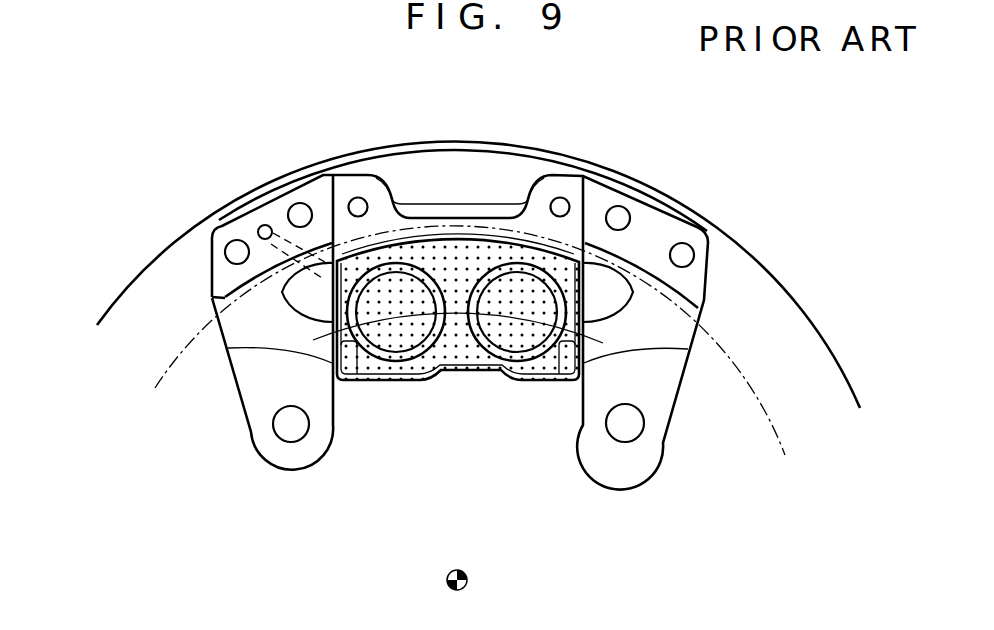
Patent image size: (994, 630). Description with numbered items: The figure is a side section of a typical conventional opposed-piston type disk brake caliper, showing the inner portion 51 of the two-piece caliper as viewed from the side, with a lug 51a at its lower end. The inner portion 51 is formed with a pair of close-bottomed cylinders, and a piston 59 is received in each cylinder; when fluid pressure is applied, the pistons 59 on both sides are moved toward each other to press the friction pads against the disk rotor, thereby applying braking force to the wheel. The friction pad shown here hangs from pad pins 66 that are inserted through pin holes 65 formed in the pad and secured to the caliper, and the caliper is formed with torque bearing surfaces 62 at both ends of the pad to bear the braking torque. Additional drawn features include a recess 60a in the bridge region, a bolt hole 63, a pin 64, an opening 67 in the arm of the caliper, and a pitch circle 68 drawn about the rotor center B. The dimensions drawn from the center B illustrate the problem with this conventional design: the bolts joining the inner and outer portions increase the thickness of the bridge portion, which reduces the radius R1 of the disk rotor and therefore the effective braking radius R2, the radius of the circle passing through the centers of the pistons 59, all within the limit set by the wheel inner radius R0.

The inner portion 51 is at (645, 207).
The caliper mounting lug 51a is at (270, 448).
The piston 59 is at (398, 367).
The bridge recess 60a is at (405, 217).
The torque bearing surface 62 is at (354, 345).
The bolt hole 63 is at (678, 250).
The guide pin 64 is at (263, 229).
The pin hole 65 is at (560, 203).
The pad pin 66 is at (356, 200).
The opening 67 is at (263, 281).
The pitch circle 68 is at (723, 343).
The disc rotation center B is at (445, 582).
The wheel inner radius R0 is at (857, 390).
The radius of the disk rotor R1 is at (752, 393).
The effective braking radius R2 is at (457, 578).